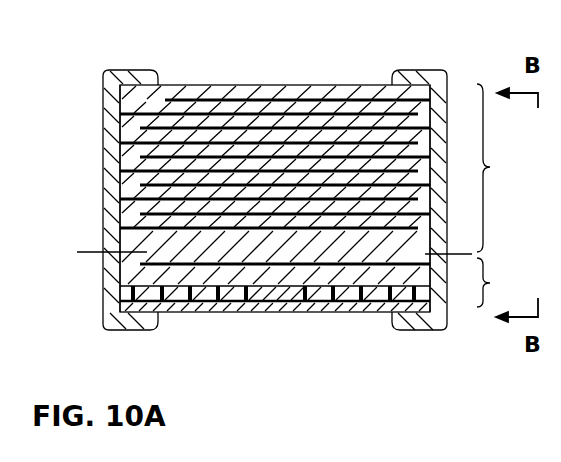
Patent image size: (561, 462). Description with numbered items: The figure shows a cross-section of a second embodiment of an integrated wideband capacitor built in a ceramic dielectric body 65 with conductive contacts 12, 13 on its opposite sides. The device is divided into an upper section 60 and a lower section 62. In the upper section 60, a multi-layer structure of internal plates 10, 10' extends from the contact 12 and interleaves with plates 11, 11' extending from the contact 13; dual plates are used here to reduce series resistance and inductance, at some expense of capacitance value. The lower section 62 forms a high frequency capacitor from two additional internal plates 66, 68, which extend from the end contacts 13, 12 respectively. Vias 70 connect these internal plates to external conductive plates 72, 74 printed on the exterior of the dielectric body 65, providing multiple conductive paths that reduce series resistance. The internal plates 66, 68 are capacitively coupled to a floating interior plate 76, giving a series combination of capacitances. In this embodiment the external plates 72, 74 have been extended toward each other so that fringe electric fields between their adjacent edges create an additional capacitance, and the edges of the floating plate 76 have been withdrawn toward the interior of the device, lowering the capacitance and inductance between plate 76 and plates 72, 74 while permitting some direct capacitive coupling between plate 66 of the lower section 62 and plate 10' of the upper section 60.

The plate 10 is at (240, 160).
The plate 10' is at (227, 136).
The plate 11 is at (307, 140).
The plate 11' is at (309, 138).
The conductive contact 12 is at (103, 86).
The conductive contact 13 is at (432, 72).
The upper section 60 is at (499, 168).
The lower section 62 is at (497, 282).
The ceramic dielectric body 65 is at (295, 85).
The internal plate 66 is at (284, 303).
The internal plate 68 is at (257, 305).
The vias 70 is at (190, 303).
The external conductive plate 72 is at (335, 305).
The external conductive plate 74 is at (218, 305).
The floating interior plate 76 is at (125, 278).